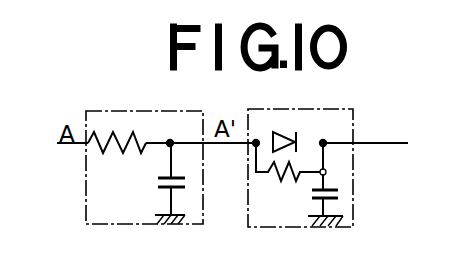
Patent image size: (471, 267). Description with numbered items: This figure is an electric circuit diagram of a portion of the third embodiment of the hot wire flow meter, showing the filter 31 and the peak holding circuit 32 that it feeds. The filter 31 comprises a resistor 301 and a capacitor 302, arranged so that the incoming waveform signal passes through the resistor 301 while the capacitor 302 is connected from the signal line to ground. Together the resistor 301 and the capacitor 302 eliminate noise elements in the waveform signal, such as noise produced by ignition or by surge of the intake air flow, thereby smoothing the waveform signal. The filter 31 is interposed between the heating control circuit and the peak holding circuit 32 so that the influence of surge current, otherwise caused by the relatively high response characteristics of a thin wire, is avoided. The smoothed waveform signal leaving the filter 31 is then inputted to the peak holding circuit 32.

The filter 31 is at (86, 192).
The resistor 301 is at (119, 134).
The capacitor 302 is at (158, 183).
The peak holding circuit 32 is at (354, 161).